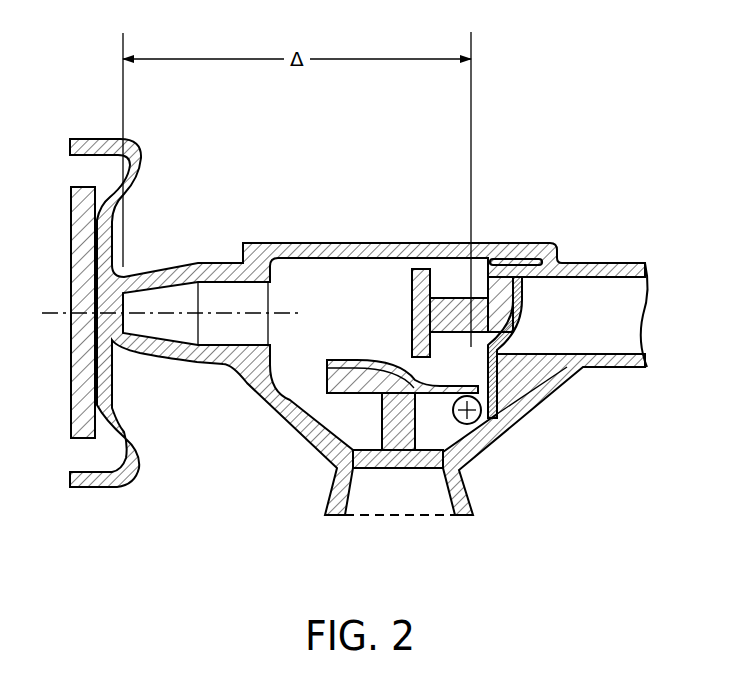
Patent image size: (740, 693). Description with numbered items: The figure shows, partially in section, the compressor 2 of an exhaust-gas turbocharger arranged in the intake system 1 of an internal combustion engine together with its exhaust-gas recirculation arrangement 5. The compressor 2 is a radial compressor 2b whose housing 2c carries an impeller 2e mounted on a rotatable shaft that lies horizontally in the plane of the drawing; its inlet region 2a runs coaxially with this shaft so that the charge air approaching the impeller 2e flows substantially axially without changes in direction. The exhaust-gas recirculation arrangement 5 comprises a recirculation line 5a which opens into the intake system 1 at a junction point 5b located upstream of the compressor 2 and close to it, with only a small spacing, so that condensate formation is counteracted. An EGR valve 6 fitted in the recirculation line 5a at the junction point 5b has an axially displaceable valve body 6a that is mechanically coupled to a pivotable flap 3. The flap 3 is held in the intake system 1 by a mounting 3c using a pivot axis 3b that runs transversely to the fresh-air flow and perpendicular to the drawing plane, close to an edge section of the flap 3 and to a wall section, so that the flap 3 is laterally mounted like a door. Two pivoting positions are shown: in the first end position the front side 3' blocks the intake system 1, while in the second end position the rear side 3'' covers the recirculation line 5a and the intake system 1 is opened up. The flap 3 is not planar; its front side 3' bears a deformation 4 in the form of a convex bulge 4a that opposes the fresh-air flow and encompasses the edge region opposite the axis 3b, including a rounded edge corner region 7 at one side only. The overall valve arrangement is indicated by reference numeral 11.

The intake system 1 is at (614, 305).
The compressor 2 is at (105, 184).
The inlet region 2a is at (197, 341).
The radial compressor 2b is at (83, 165).
The housing 2c is at (117, 202).
The impeller 2e is at (93, 326).
The flap 3 is at (497, 365).
The front side 3' is at (503, 347).
The rear side 3'' is at (363, 341).
The pivot axis 3b is at (491, 424).
The mounting 3c is at (460, 429).
The deformation 4 is at (434, 297).
The convex bulge 4a is at (434, 297).
The exhaust-gas recirculation arrangement 5 is at (407, 514).
The recirculation line 5a is at (437, 505).
The junction point 5b is at (480, 383).
The EGR valve 6 is at (406, 367).
The valve body 6a is at (413, 270).
The edge corner region 7 is at (510, 276).
The valve device 11 is at (550, 112).